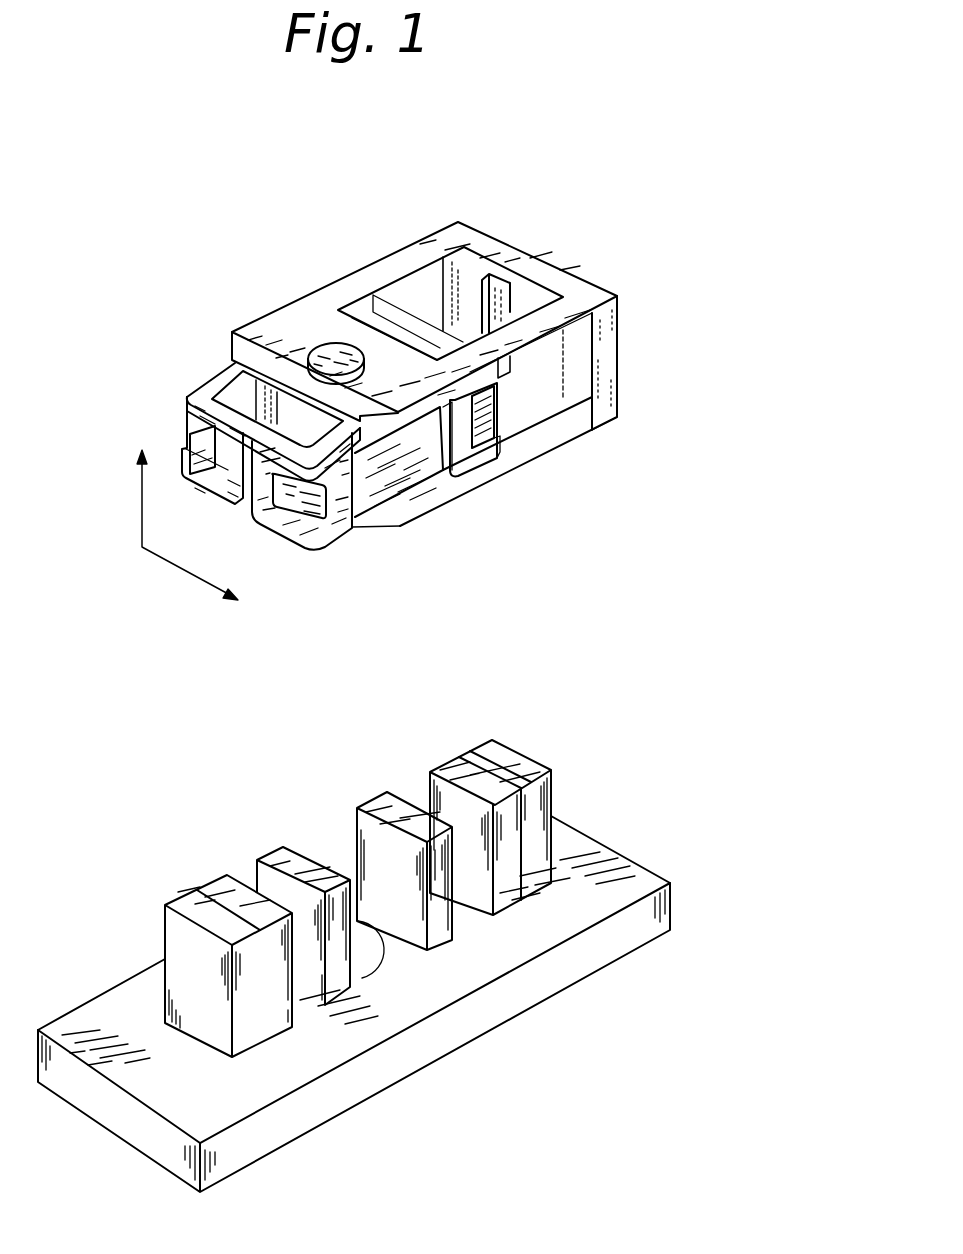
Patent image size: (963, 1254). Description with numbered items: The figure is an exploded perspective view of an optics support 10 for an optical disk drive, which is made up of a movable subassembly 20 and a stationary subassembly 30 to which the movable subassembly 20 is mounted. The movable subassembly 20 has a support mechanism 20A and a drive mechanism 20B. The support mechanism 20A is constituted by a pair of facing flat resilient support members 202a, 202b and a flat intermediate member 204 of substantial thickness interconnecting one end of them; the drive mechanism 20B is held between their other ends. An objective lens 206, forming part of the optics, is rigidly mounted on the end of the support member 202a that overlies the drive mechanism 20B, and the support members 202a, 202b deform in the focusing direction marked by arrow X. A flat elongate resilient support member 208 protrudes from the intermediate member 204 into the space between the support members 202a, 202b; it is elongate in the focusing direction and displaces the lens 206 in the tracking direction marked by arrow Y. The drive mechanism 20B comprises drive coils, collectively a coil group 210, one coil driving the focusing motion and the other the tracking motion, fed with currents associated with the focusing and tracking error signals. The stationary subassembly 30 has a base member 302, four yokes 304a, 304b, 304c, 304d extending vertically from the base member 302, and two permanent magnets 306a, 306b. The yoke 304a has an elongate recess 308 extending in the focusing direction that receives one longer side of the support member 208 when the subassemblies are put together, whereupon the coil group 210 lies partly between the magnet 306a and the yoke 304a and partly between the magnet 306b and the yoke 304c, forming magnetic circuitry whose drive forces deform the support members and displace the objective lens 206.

The optics support 10 is at (631, 160).
The movable subassembly 20 is at (641, 307).
The support mechanism 20A is at (477, 217).
The drive mechanism 20B is at (166, 422).
The flat resilient support member 202a is at (536, 325).
The flat resilient support member 202b is at (538, 434).
The intermediate member 204 is at (612, 349).
The objective lens 206 is at (328, 348).
The flat elongate support member 208 is at (493, 268).
The coil group 210 is at (343, 547).
The stationary subassembly 30 is at (630, 777).
The base member 302 is at (608, 849).
The yoke 304a is at (488, 744).
The yoke 304b is at (378, 805).
The yoke 304c is at (288, 857).
The yoke 304d is at (186, 893).
The permanent magnet 306a is at (447, 768).
The permanent magnet 306b is at (218, 883).
The elongate recess 308 is at (508, 757).